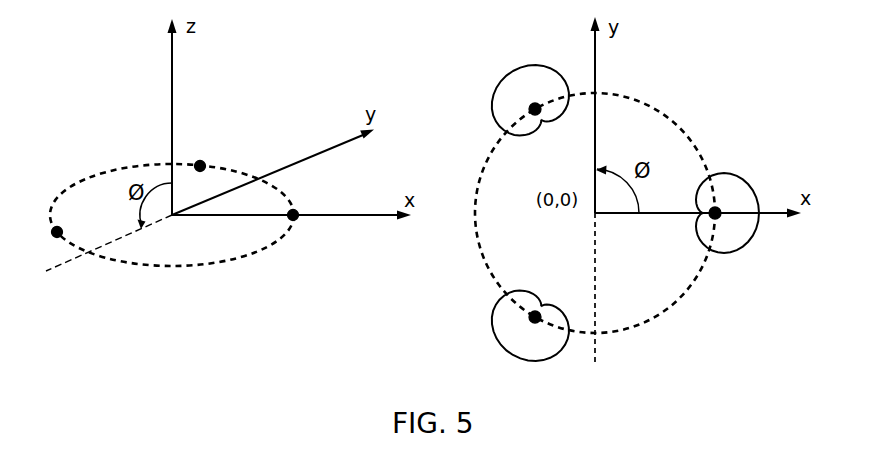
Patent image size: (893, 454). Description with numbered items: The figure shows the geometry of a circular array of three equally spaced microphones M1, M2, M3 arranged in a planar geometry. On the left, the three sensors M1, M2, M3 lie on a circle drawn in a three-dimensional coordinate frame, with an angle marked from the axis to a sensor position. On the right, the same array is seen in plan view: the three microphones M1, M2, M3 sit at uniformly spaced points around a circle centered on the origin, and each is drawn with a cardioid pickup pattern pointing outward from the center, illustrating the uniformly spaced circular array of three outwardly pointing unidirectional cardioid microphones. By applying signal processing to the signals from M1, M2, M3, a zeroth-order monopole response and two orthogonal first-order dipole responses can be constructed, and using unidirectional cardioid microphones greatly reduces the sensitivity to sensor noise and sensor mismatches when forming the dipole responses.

The first microphone M1 is at (528, 225).
The second microphone M2 is at (379, 107).
The third microphone M3 is at (310, 298).